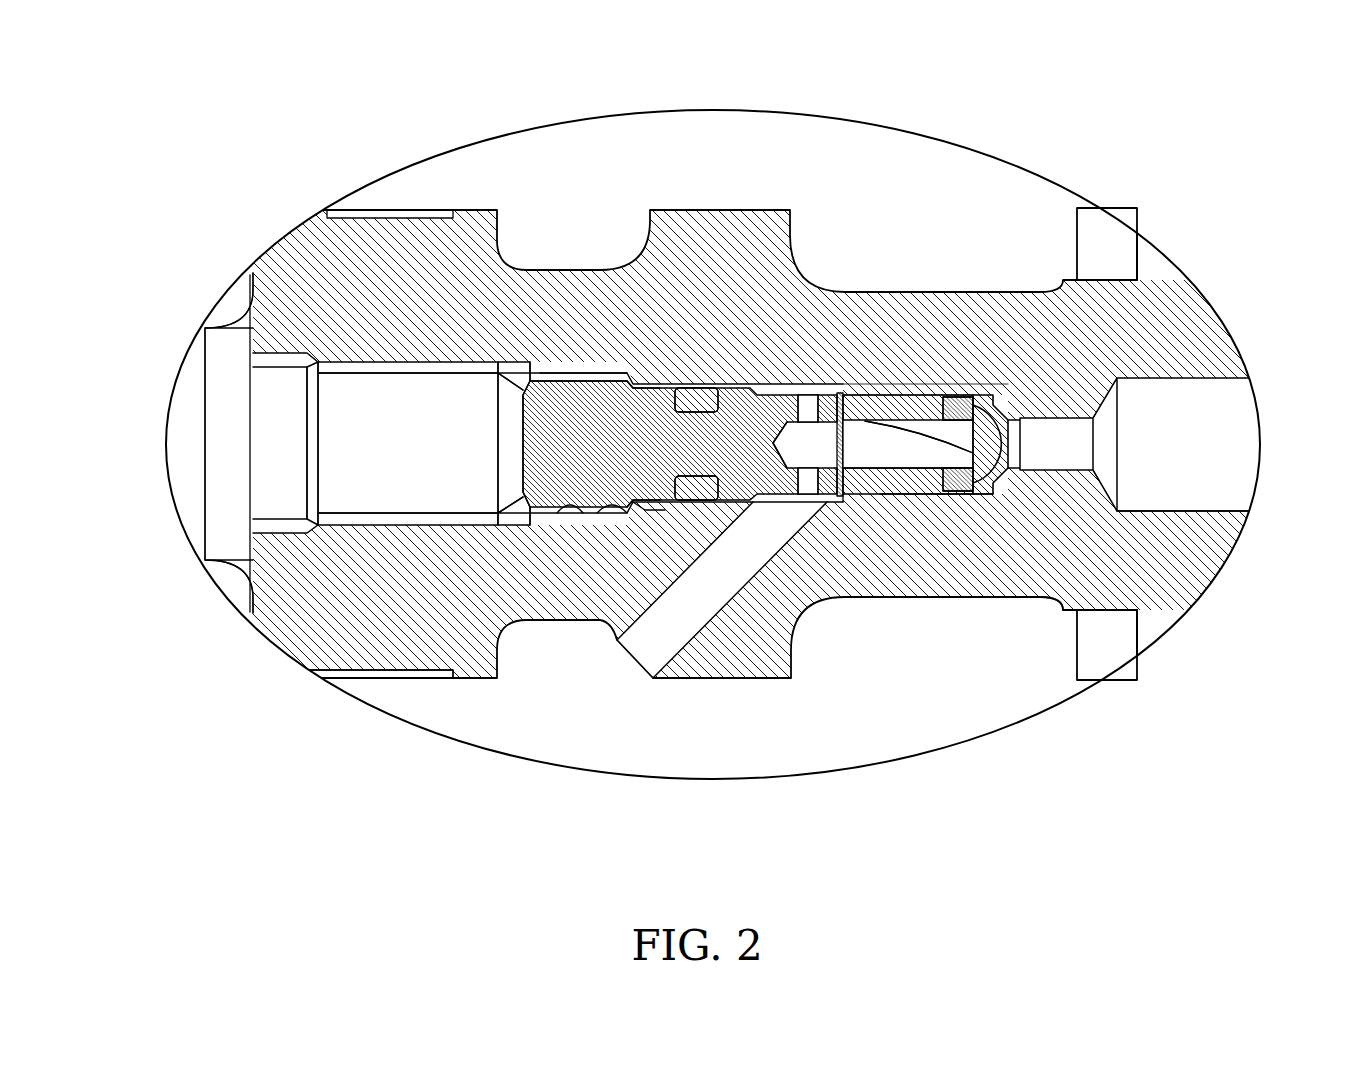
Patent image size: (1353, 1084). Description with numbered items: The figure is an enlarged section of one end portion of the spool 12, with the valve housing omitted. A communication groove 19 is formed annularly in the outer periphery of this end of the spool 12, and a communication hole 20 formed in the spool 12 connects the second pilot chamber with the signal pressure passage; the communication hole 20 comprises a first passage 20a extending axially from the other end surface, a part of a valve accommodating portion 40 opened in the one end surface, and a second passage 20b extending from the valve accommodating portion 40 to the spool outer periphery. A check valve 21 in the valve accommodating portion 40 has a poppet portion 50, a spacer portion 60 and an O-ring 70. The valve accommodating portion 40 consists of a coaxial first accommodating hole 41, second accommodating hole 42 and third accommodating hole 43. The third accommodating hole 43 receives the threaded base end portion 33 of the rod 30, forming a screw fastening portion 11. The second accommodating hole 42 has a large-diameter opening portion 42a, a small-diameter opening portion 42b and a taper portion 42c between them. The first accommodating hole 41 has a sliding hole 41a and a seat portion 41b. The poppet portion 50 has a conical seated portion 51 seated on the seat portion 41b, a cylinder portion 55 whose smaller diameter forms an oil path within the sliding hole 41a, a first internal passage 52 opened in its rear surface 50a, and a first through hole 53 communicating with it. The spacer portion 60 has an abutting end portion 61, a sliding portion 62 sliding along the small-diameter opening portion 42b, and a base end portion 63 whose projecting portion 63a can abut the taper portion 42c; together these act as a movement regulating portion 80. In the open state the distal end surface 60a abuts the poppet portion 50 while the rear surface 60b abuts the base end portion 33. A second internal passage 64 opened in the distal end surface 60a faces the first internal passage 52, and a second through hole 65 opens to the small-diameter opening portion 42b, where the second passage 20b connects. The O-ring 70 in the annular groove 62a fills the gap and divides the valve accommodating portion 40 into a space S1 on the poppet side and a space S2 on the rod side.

The screw fastening portion 11 is at (343, 532).
The spool 12 is at (1177, 270).
The communication groove 19 is at (343, 673).
The communication hole 20 is at (962, 507).
The first passage 20a is at (1193, 513).
The second passage 20b is at (772, 582).
The check valve 21 is at (847, 393).
The rod 30 is at (218, 365).
The base end portion 33 is at (377, 500).
The valve accommodating portion 40 is at (527, 530).
The first accommodating hole 41 is at (1018, 677).
The sliding hole 41a is at (1003, 490).
The seat portion 41b is at (1007, 490).
The second accommodating hole 42 is at (615, 702).
The large-diameter opening portion 42a is at (567, 513).
The small-diameter opening portion 42b is at (637, 513).
The taper portion 42c is at (602, 513).
The third accommodating hole 43 is at (437, 523).
The poppet portion 50 is at (1022, 463).
The rear surface 50a is at (868, 472).
The seated portion 51 is at (992, 406).
The first internal passage 52 is at (982, 405).
The first through hole 53 is at (970, 445).
The cylinder portion 55 is at (968, 494).
The spacer portion 60 is at (810, 273).
The distal end surface 60a is at (1018, 462).
The rear surface 60b is at (518, 420).
The abutting end portion 61 is at (830, 385).
The sliding portion 62 is at (700, 391).
The annular groove 62a is at (700, 502).
The base end portion 63 is at (623, 362).
The projecting portion 63a is at (662, 387).
The second internal passage 64 is at (910, 494).
The second through hole 65 is at (838, 498).
The O-ring 70 is at (787, 383).
The movement regulating portion 80 is at (648, 373).
The space S1 is at (930, 383).
The space S2 is at (572, 393).